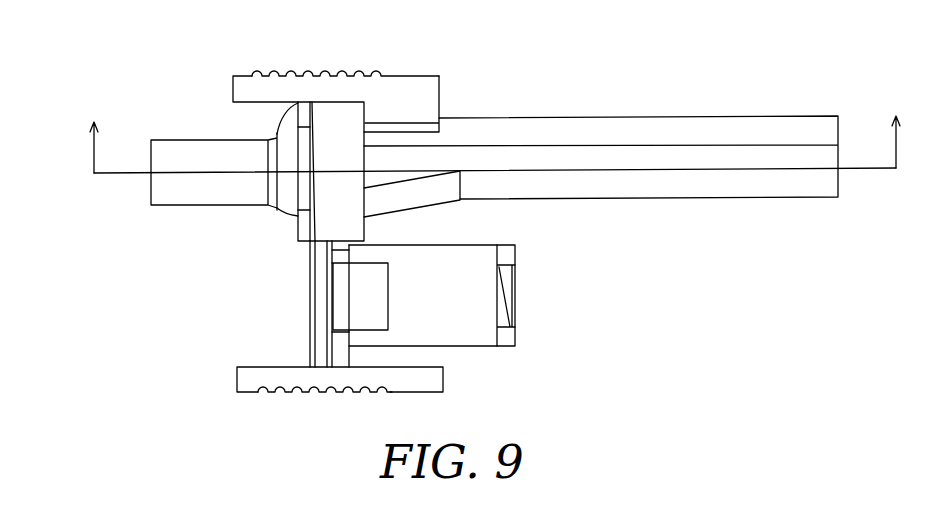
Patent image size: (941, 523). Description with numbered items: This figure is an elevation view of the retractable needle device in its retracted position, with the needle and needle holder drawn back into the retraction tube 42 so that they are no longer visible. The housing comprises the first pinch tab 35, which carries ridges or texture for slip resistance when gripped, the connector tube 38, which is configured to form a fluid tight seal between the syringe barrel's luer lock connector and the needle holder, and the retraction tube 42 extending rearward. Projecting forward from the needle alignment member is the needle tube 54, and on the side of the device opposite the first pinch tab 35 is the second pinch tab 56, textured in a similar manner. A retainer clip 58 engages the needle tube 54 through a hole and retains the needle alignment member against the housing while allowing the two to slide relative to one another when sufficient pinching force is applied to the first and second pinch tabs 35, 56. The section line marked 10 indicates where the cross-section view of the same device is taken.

The section line 10- 10 is at (501, 122).
The first pinch tab 35 is at (403, 88).
The connector tube 38 is at (488, 338).
The retraction tube 42 is at (718, 127).
The needle tube 54 is at (205, 193).
The second pinch tab 56 is at (278, 375).
The retainer clip 58 is at (310, 207).